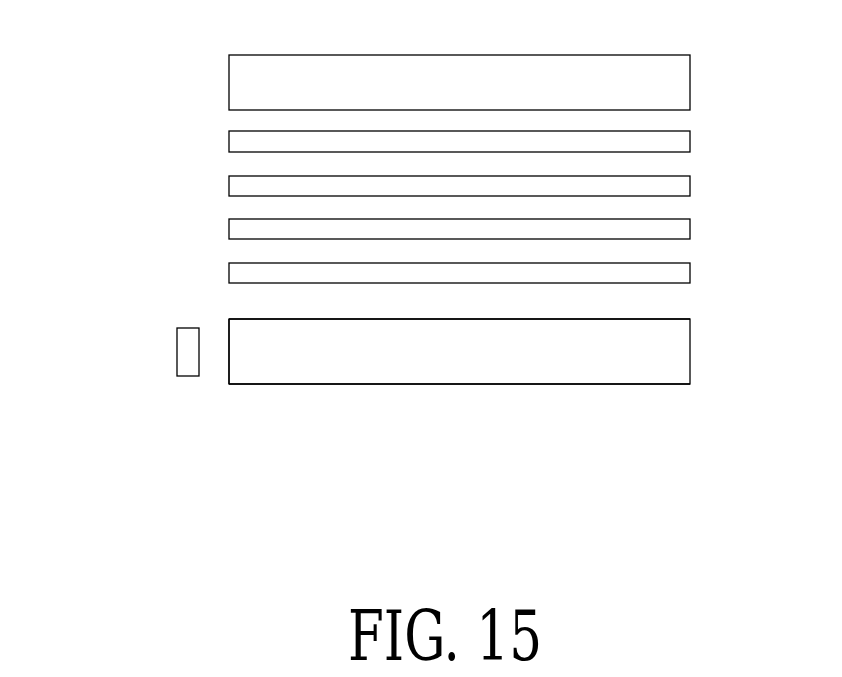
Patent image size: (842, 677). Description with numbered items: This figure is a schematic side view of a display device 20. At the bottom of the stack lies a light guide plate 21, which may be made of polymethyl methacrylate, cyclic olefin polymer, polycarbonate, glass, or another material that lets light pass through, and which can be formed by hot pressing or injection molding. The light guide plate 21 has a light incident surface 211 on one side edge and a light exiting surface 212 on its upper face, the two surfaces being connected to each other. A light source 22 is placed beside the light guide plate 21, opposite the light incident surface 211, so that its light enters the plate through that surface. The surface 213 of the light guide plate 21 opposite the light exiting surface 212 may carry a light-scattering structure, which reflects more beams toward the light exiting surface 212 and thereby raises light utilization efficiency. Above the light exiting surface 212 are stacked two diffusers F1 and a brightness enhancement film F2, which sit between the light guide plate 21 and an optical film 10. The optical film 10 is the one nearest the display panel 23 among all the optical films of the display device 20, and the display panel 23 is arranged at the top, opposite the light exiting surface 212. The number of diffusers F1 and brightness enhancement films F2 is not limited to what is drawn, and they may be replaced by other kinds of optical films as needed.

The display device 20 is at (182, 37).
The display panel 23 is at (692, 80).
The optical film 10 is at (692, 140).
The brightness enhancement film F2 is at (692, 186).
The diffuser F1 is at (692, 229).
The light guide plate 21 is at (692, 350).
The light source 22 is at (186, 351).
The light exiting surface 212 is at (257, 317).
The light incident surface 211 is at (229, 362).
The surface of the light guide plate opposite the light exiting surface 213 is at (324, 385).